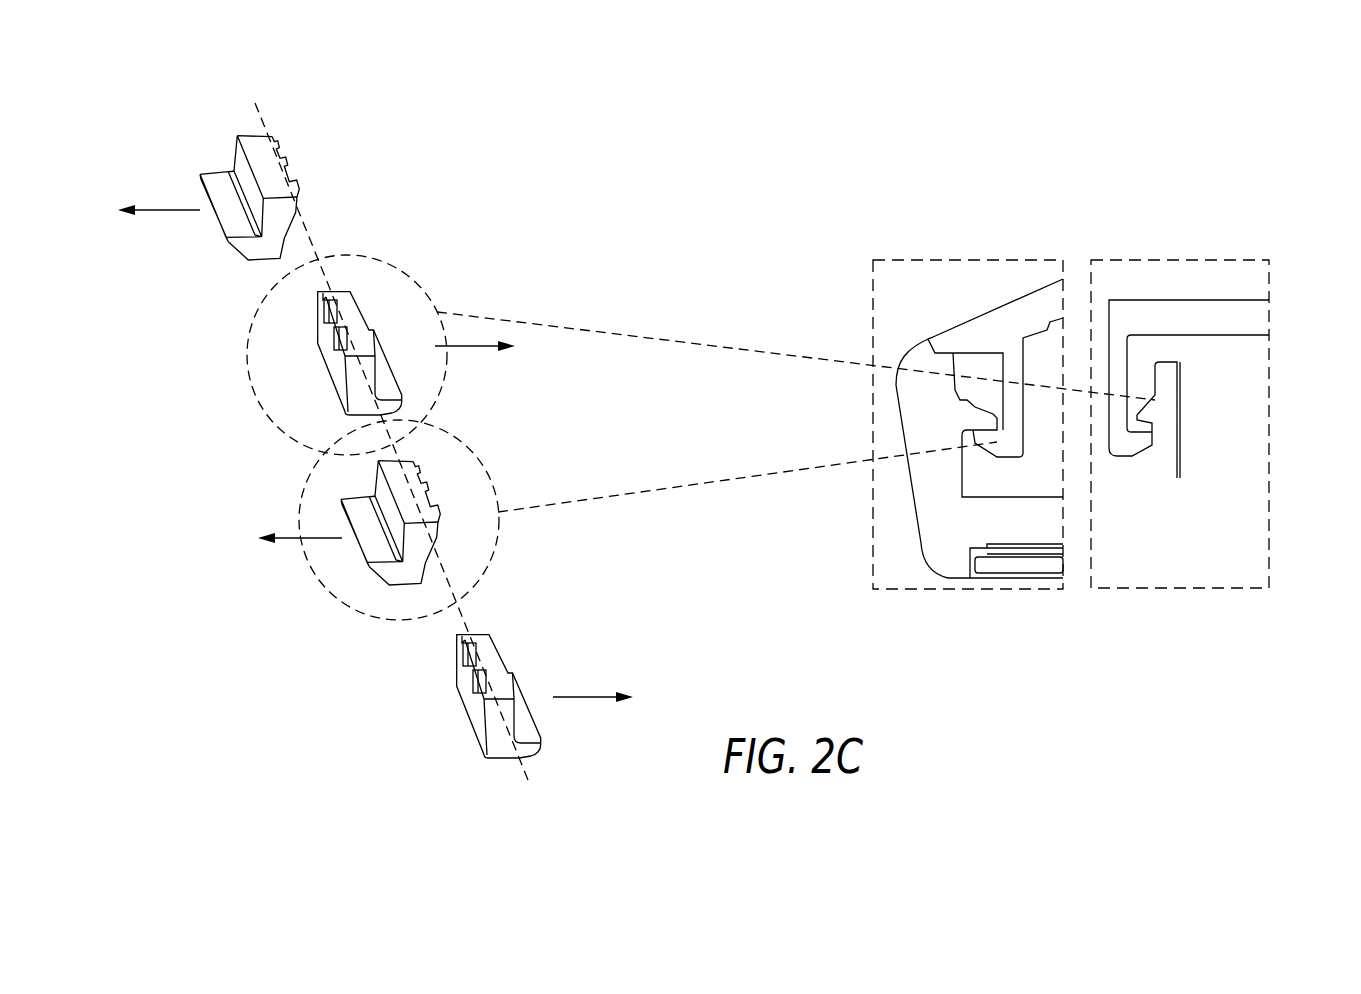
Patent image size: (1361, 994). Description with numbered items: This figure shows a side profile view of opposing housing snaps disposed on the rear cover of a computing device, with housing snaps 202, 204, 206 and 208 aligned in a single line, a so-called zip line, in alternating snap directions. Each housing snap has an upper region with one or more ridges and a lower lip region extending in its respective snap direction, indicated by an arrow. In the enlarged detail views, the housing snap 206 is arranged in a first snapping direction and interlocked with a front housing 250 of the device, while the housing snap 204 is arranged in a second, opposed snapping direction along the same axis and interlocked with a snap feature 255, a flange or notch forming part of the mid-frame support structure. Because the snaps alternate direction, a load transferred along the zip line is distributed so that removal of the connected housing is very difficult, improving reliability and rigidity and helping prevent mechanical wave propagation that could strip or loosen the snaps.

The housing snap 202 is at (318, 168).
The housing snap 204 is at (465, 294).
The housing snap 206 is at (513, 476).
The housing snap 208 is at (538, 647).
The front housing 250 is at (922, 543).
The snap feature 255 is at (1180, 440).